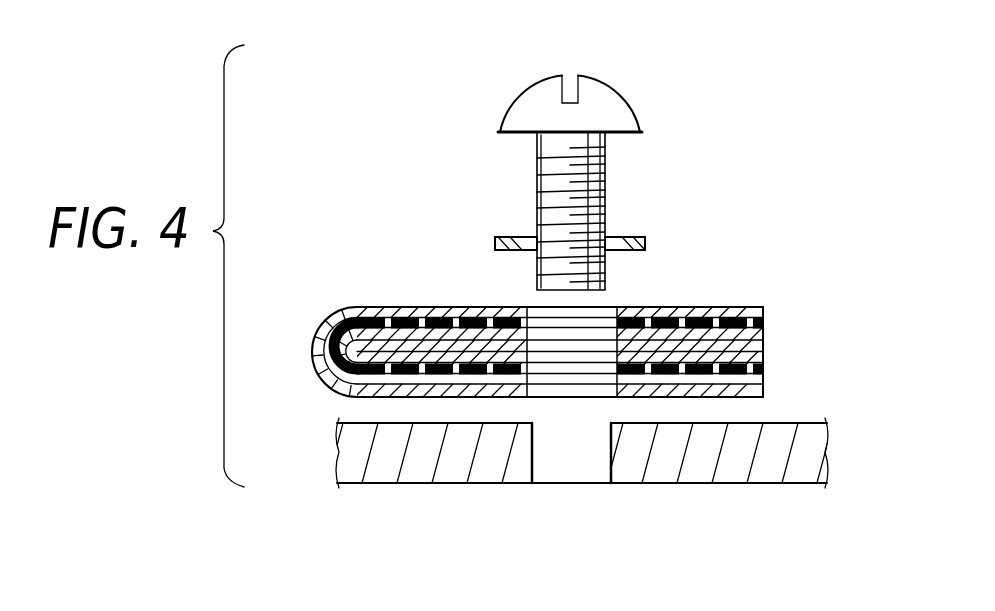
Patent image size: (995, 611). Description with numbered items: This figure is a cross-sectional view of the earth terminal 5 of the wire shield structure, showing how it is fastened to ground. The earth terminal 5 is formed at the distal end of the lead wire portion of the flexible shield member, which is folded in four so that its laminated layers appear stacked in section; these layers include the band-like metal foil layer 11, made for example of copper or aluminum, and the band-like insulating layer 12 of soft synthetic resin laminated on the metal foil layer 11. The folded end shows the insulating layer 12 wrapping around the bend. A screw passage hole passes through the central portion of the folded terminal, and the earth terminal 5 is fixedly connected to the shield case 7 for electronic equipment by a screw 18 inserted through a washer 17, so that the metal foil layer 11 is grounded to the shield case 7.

The screw 18 is at (614, 108).
The washer 17 is at (637, 236).
The earth terminal 5 is at (740, 297).
The metal foil layer 11 is at (762, 387).
The insulating layer 12 is at (312, 360).
The shield case 7 is at (763, 433).